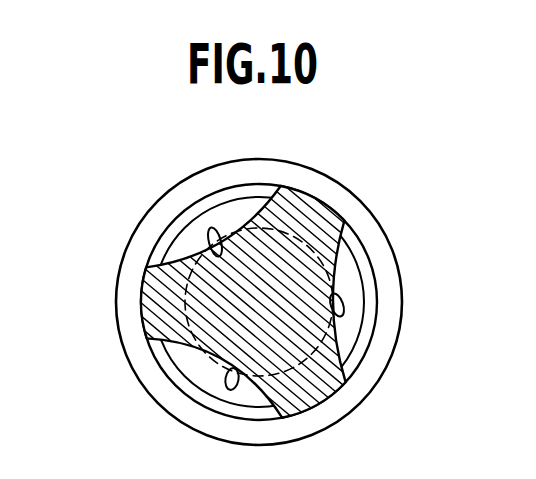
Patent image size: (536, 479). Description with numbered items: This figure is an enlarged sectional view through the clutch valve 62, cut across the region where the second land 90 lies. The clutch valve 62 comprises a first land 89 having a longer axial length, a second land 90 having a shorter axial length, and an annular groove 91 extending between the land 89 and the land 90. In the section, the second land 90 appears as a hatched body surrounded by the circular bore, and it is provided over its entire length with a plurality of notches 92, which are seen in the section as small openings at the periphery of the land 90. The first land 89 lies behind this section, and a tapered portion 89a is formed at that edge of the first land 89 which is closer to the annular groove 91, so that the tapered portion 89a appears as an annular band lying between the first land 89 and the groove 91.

The clutch valve 62 is at (350, 186).
The first land 89 is at (160, 230).
The tapered portion 89a is at (198, 208).
The second land 90 is at (308, 197).
The annular groove 91 is at (305, 236).
The notches 92 is at (226, 251).